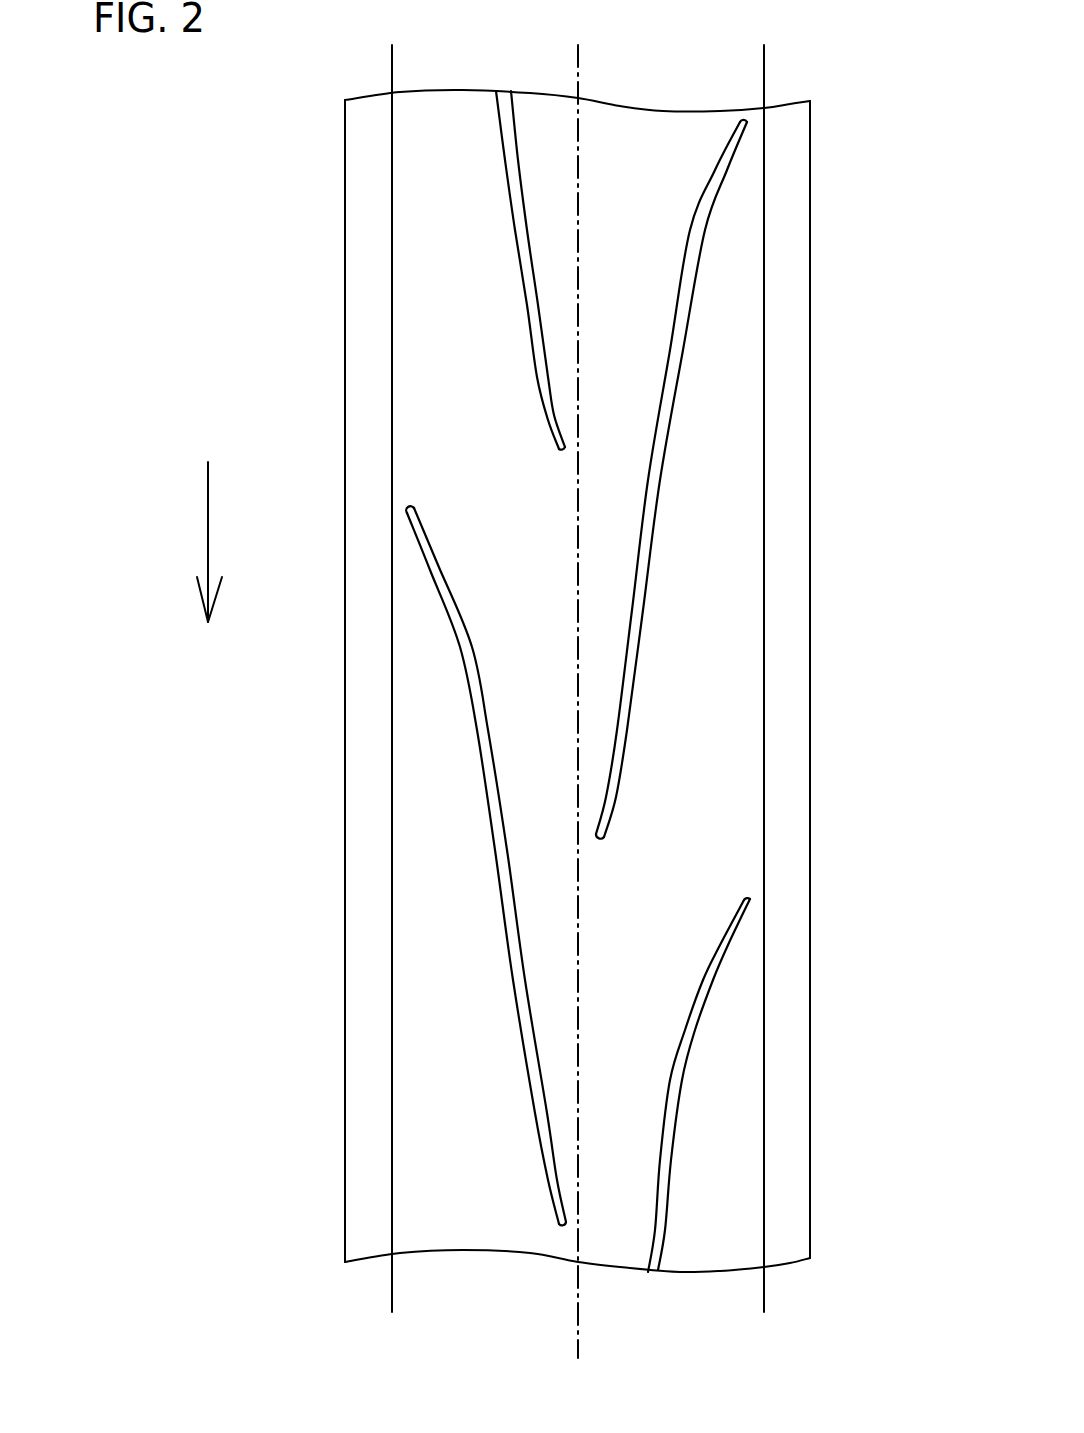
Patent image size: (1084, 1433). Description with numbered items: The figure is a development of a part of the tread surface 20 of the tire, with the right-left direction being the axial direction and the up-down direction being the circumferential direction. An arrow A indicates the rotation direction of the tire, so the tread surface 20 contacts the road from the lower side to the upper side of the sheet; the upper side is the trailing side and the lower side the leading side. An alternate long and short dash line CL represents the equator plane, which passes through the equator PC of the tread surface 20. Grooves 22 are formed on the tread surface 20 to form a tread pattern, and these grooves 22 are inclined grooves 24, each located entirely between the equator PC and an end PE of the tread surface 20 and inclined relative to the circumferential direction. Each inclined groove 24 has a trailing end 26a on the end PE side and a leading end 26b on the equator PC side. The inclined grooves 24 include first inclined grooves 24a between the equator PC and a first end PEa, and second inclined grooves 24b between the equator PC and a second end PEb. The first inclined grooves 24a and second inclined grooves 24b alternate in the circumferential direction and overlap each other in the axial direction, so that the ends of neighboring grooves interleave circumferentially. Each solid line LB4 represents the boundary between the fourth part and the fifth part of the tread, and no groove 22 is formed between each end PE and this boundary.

The tread surface 20 is at (577, 681).
The grooves 22 is at (577, 681).
The inclined grooves 24 is at (577, 681).
The first inclined grooves 24a is at (508, 137).
The second inclined grooves 24b is at (702, 225).
The trailing end 26a is at (743, 115).
The leading end 26b is at (560, 452).
The end of the tread surface PE is at (577, 681).
The first end of the tread surface PEa is at (345, 1185).
The second end of the tread surface PEb is at (810, 1185).
The solid line LB4 is at (392, 1292).
The alternate long and short dash line CL is at (638, 707).
The equator PC is at (578, 1310).
The arrow A is at (197, 542).